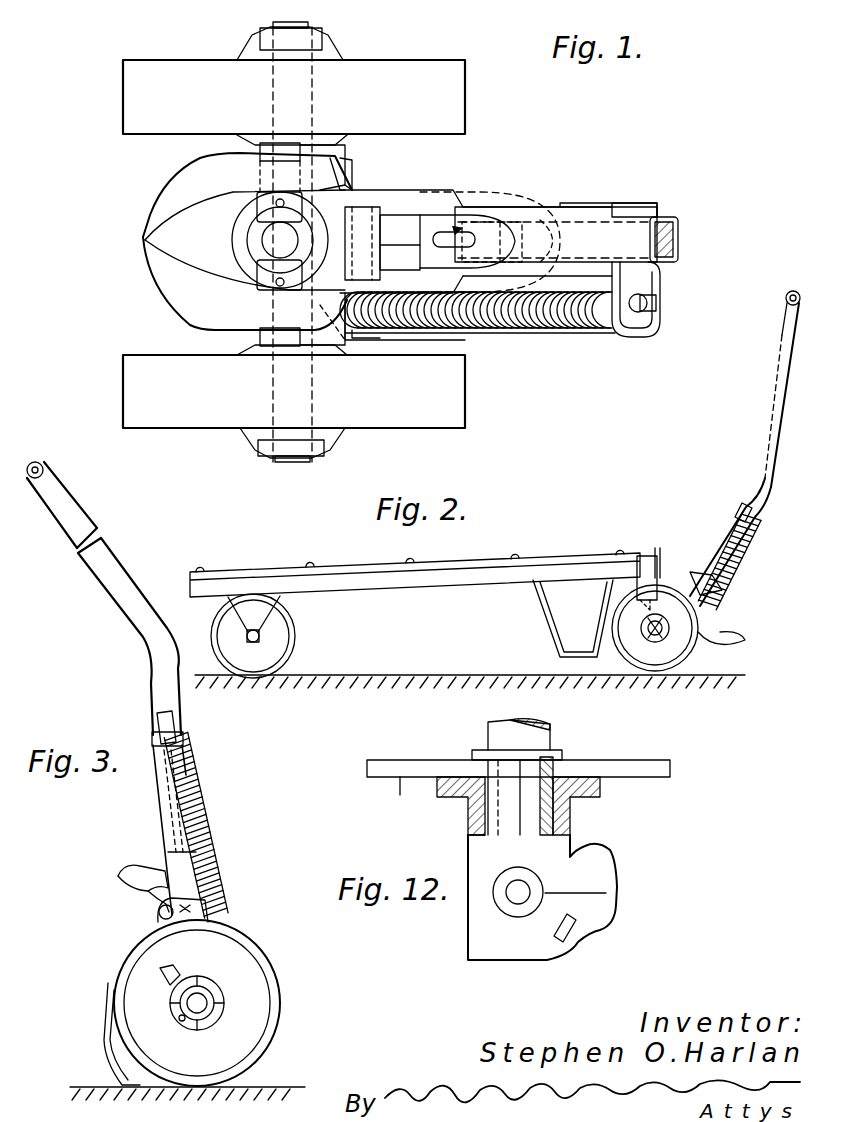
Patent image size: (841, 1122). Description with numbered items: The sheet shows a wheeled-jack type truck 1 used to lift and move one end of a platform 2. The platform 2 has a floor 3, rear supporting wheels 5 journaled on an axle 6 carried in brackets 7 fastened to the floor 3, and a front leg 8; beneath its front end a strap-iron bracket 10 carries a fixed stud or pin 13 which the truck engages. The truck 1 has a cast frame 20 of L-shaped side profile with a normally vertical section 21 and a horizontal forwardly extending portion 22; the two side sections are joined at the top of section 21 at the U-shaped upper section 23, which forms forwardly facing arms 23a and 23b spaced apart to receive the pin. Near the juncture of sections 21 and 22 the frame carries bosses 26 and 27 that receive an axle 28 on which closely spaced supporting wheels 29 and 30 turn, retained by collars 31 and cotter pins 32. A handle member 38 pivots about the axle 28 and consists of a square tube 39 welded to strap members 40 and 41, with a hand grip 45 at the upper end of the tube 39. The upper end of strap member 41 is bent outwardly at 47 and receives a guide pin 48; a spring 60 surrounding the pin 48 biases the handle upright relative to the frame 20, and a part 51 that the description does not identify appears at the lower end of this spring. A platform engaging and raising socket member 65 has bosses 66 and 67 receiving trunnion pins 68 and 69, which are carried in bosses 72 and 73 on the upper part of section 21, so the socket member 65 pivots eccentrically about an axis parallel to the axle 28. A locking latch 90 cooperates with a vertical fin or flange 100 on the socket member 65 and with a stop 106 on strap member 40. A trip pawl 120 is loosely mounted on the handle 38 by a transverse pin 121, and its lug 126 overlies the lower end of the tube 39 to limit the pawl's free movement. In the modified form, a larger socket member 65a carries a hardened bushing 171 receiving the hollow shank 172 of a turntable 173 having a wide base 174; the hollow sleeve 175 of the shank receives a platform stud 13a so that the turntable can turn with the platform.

In FIG. 2, the truck 1 is at (704, 535).
In FIG. 3, the truck 1 is at (232, 895).
In FIG. 2, the platform 2 is at (448, 560).
In FIG. 2, the floor 3 is at (345, 572).
In FIG. 2, the rear supporting wheels 5 is at (288, 645).
In FIG. 2, the axle 6 is at (262, 635).
In FIG. 2, the brackets 7 is at (265, 608).
In FIG. 2, the front leg 8 is at (540, 615).
In FIG. 2, the bracket 10 is at (655, 575).
In FIG. 2, the stud or pin 13 is at (638, 560).
In FIG. 12, the platform stud 13a is at (525, 716).
In FIG. 1, the frame 20 is at (212, 245).
In FIG. 3, the frame 20 is at (91, 1034).
In FIG. 1, the normally vertical section 21 is at (165, 213).
In FIG. 3, the normally vertical section 21 is at (120, 1082).
In FIG. 1, the horizontal forwardly extending portion 22 is at (630, 230).
In FIG. 2, the horizontal forwardly extending portion 22 is at (708, 636).
In FIG. 1, the U-shaped upper section 23 is at (178, 268).
In FIG. 1, the arm 23a is at (350, 190).
In FIG. 1, the arm 23b is at (352, 300).
In FIG. 1, the boss 26 is at (340, 152).
In FIG. 1, the boss 27 is at (350, 300).
In FIG. 1, the axle 28 is at (295, 462).
In FIG. 2, the axle 28 is at (655, 640).
In FIG. 3, the axle 28 is at (208, 993).
In FIG. 1, the supporting wheel 29 is at (124, 116).
In FIG. 1, the supporting wheel 30 is at (132, 400).
In FIG. 2, the supporting wheel 30 is at (680, 650).
In FIG. 3, the supporting wheel 30 is at (197, 1003).
In FIG. 1, the collars 31 is at (325, 42).
In FIG. 3, the collars 31 is at (215, 1003).
In FIG. 1, the cotter pins 32 is at (262, 38).
In FIG. 3, the cotter pins 32 is at (182, 1020).
In FIG. 1, the handle member 38 is at (688, 212).
In FIG. 2, the handle member 38 is at (750, 490).
In FIG. 3, the handle member 38 is at (150, 783).
In FIG. 1, the tube 39 is at (640, 205).
In FIG. 2, the tube 39 is at (775, 385).
In FIG. 3, the tube 39 is at (118, 578).
In FIG. 1, the strap member 40 is at (470, 190).
In FIG. 1, the strap member 41 is at (520, 330).
In FIG. 3, the strap member 41 is at (175, 828).
In FIG. 2, the hand grip 45 is at (786, 296).
In FIG. 3, the hand grip 45 is at (35, 462).
In FIG. 1, the outwardly bent end 47 is at (640, 330).
In FIG. 3, the outwardly bent end 47 is at (184, 742).
In FIG. 1, the guide pin 48 is at (652, 310).
In FIG. 2, the guide pin 48 is at (752, 515).
In FIG. 3, the guide pin 48 is at (175, 722).
In FIG. 1, the rod end 51 is at (385, 338).
In FIG. 1, the spring 60 is at (575, 330).
In FIG. 2, the spring 60 is at (722, 572).
In FIG. 3, the spring 60 is at (210, 828).
In FIG. 1, the platform engaging and raising socket member 65 is at (248, 232).
In FIG. 12, the socket member 65a is at (488, 935).
In FIG. 1, the boss 66 is at (262, 198).
In FIG. 1, the boss 67 is at (262, 286).
In FIG. 1, the trunnion pin 68 is at (333, 152).
In FIG. 1, the trunnion pin 69 is at (335, 340).
In FIG. 1, the boss 72 is at (268, 150).
In FIG. 1, the boss 73 is at (268, 340).
In FIG. 1, the locking latch 90 is at (398, 228).
In FIG. 1, the vertical fin or flange 100 is at (358, 235).
In FIG. 1, the stop 106 is at (400, 175).
In FIG. 1, the trip pawl 120 is at (500, 200).
In FIG. 2, the trip pawl 120 is at (690, 560).
In FIG. 3, the trip pawl 120 is at (150, 905).
In FIG. 1, the transverse pin 121 is at (412, 250).
In FIG. 3, the transverse pin 121 is at (160, 915).
In FIG. 3, the lug 126 is at (118, 880).
In FIG. 12, the hardened bushing 171 is at (578, 814).
In FIG. 12, the shank 172 is at (475, 812).
In FIG. 12, the turntable 173 is at (445, 760).
In FIG. 12, the base 174 is at (402, 785).
In FIG. 12, the turntable sleeve or socket 175 is at (545, 760).